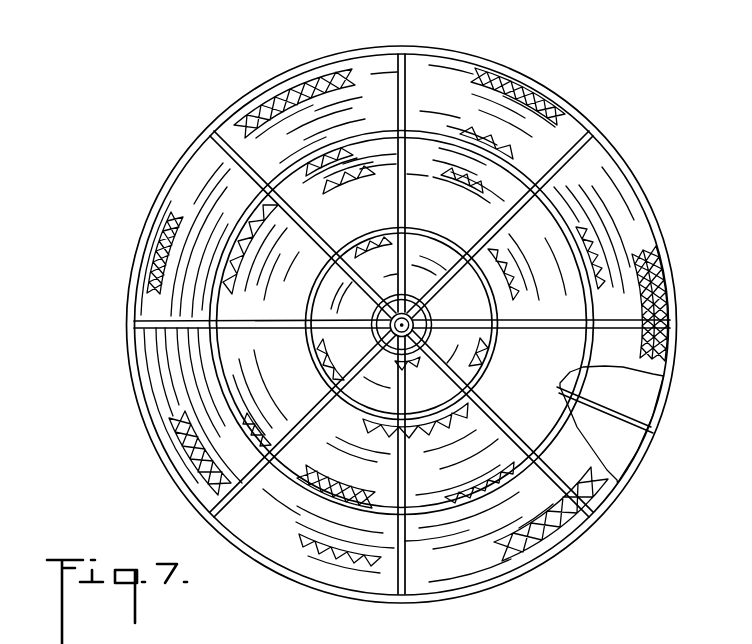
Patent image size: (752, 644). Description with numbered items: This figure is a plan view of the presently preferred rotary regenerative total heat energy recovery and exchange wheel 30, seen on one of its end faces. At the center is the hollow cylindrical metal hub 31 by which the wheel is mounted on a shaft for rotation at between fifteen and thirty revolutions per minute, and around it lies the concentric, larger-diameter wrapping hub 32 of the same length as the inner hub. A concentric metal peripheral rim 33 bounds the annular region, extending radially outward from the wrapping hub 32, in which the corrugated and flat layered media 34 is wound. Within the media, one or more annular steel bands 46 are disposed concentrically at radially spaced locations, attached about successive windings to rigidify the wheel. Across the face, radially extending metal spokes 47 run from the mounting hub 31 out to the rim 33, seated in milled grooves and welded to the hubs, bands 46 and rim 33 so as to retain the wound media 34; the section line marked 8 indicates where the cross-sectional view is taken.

The section line 8- 8 is at (96, 385).
The rotary regenerative total heat energy recovery and exchange wheel 30 is at (597, 538).
The hollow cylindrical metal hub 31 is at (386, 372).
The wrapping hub 32 is at (433, 306).
The peripheral rim 33 is at (509, 578).
The media 34 is at (272, 520).
The annular metal band 46 is at (290, 466).
The spoke 47 is at (613, 413).